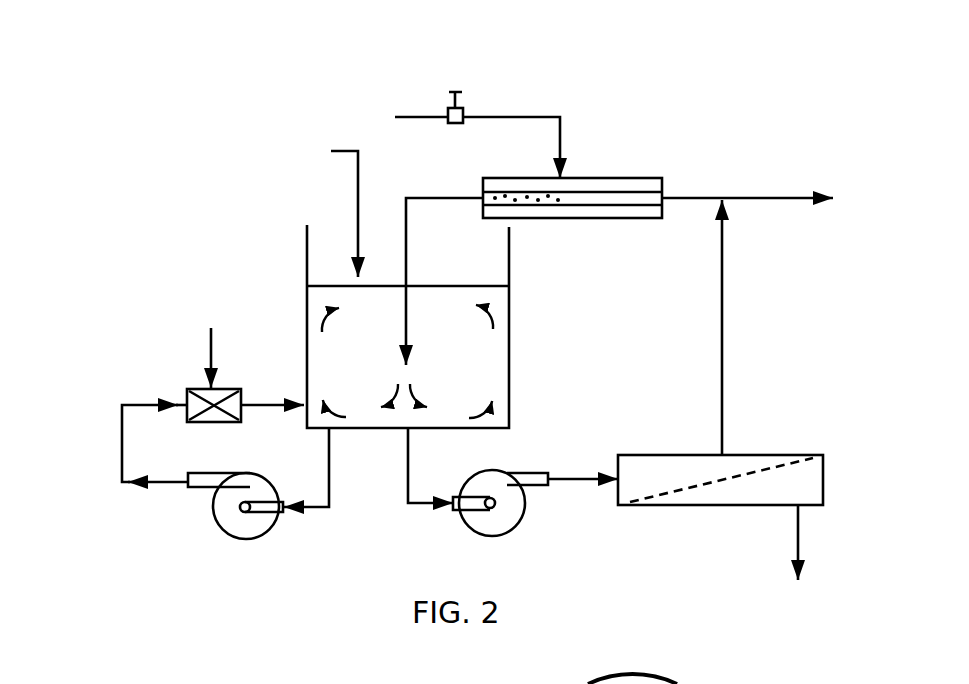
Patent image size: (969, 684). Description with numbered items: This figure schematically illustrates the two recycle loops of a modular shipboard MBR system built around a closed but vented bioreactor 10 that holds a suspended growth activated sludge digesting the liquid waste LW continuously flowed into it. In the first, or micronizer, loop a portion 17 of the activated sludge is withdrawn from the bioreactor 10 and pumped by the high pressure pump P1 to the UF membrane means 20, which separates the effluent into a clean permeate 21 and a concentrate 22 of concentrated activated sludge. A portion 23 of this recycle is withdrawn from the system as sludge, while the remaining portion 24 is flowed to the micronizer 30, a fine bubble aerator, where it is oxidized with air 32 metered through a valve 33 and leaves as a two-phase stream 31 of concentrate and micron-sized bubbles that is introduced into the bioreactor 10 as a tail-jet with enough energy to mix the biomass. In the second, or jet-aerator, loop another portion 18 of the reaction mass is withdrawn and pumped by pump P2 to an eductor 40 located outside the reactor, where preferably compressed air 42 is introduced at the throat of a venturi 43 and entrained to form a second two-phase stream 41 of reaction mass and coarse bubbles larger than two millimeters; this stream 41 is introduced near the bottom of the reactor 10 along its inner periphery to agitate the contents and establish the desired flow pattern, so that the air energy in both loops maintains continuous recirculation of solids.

The bioreactor 10 is at (408, 326).
The portion of activated sludge 17 is at (405, 500).
The portion of reaction mass 18 is at (330, 460).
The membrane means 20 is at (710, 505).
The permeate 21 is at (800, 538).
The concentrate 22 is at (723, 355).
The portion of recycle withdrawn as sludge 23 is at (770, 197).
The remaining portion of recycle 24 is at (687, 197).
The micronizer 30 is at (585, 178).
The two-phase stream 31 is at (406, 313).
The air 32 is at (427, 114).
The valve 33 is at (457, 92).
The eductor 40 is at (187, 397).
The second two-phase stream 41 is at (258, 412).
The air 42 is at (207, 345).
The venturi 43 is at (220, 398).
The liquid waste LW is at (357, 192).
The pump P1 is at (518, 523).
The pump P2 is at (247, 540).